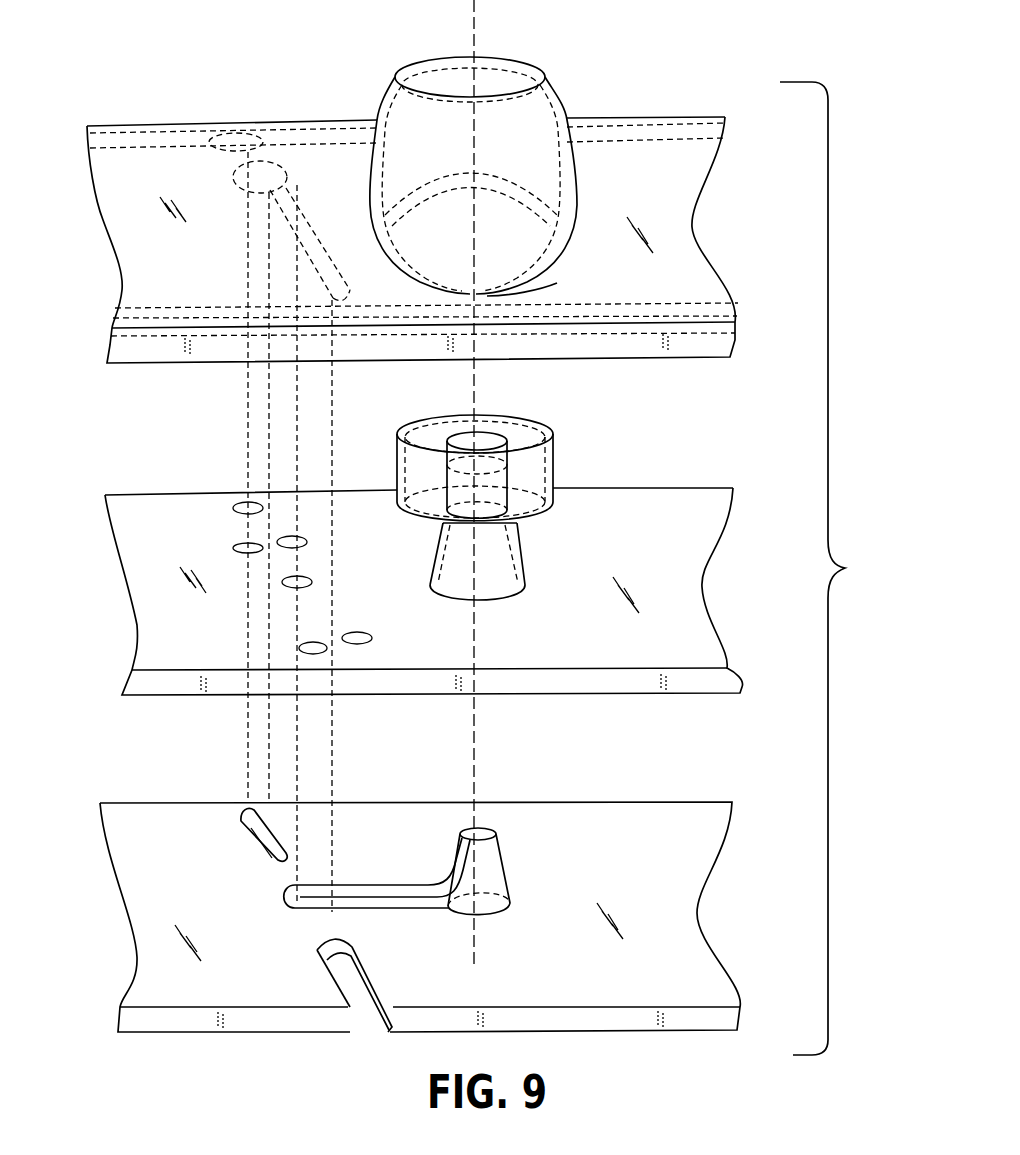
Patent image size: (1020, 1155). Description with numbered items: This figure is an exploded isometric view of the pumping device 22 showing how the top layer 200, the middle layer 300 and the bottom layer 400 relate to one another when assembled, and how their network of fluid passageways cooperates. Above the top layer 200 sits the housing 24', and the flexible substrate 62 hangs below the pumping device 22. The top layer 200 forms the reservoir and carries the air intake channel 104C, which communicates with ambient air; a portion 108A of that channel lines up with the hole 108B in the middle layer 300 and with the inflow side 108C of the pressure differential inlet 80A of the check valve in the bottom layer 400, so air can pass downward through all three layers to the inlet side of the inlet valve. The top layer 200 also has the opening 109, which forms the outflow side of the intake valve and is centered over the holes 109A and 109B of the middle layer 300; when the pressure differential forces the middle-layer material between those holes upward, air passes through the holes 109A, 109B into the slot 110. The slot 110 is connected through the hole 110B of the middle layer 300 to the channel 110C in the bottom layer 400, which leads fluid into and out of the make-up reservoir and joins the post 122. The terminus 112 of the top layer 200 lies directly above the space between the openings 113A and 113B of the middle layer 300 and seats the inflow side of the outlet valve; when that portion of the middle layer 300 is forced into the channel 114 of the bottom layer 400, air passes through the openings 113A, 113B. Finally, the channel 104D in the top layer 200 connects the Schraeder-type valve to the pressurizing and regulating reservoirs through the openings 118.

The housing 24' is at (485, 161).
The air intake channel 104C is at (172, 132).
The portion of the air intake channel 108A is at (243, 132).
The opening 109 is at (290, 168).
The slot 110 is at (315, 240).
The channel 104D is at (113, 318).
The terminus 112 is at (343, 303).
The openings 118 is at (490, 297).
The top layer 200 is at (727, 357).
The pumping device 22 is at (555, 468).
The flexible substrate 62 is at (525, 556).
The hole 108B is at (242, 503).
The hole 109A is at (233, 548).
The hole 109B is at (308, 542).
The hole 110B is at (313, 582).
The opening 113A is at (310, 645).
The opening 113B is at (366, 637).
The middle layer 300 is at (633, 693).
The bottom layer 400 is at (548, 802).
The inflow side 108C is at (247, 836).
The channel 110C is at (378, 884).
The post 122 is at (501, 856).
The pressure differential inlet 80A is at (282, 862).
The channel 114 is at (368, 970).